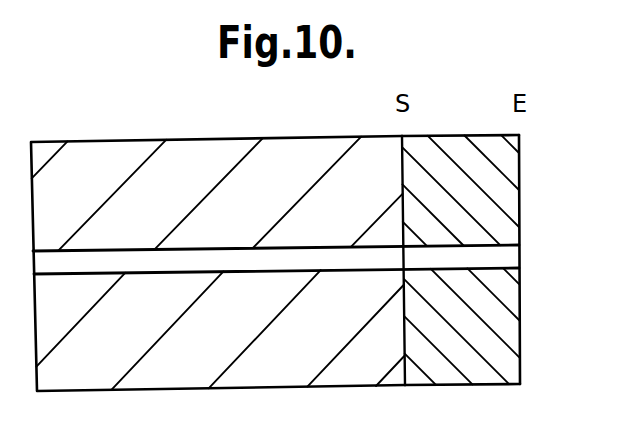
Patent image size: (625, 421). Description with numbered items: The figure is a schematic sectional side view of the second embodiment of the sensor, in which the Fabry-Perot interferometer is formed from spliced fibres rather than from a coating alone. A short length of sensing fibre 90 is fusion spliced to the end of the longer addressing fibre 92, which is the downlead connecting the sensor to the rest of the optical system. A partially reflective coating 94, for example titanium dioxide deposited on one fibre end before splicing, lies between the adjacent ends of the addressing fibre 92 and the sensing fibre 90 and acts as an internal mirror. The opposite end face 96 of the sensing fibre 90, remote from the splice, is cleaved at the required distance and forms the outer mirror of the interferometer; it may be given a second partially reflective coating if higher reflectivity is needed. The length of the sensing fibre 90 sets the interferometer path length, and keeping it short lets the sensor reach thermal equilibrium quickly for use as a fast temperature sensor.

The addressing fibre 92 is at (163, 142).
The partially reflective coating 94 is at (402, 165).
The sensing fibre 90 is at (460, 136).
The end face 96 is at (520, 198).